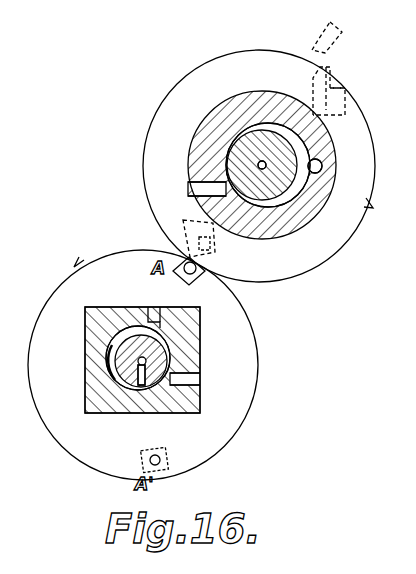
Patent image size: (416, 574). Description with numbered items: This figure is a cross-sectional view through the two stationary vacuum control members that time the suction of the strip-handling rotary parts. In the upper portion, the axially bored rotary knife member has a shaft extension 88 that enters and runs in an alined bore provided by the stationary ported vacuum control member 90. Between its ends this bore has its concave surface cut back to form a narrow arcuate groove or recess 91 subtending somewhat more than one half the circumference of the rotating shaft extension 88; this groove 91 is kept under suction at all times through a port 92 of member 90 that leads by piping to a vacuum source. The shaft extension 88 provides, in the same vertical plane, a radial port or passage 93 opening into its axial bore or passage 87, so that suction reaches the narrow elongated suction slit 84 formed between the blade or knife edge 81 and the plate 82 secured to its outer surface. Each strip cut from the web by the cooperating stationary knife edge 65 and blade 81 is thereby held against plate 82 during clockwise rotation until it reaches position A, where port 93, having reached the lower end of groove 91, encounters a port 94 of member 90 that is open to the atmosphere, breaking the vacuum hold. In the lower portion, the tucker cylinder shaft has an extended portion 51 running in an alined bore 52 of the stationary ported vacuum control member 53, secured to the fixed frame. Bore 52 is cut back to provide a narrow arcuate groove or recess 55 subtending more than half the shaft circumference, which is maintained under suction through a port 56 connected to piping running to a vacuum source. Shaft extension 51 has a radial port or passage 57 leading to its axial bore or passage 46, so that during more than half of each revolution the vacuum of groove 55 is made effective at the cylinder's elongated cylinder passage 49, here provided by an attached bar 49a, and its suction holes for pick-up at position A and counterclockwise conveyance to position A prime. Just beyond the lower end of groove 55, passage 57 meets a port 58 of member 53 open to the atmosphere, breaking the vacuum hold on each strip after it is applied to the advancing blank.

The axial bore or passage 46 is at (110, 353).
The elongated cylinder passage 49 is at (205, 268).
The attached bar 49a is at (193, 283).
The extended portion of shaft 51 is at (87, 386).
The alined bore 52 is at (168, 352).
The stationary ported vacuum control member 53 is at (86, 412).
The arcuate groove or recess 55 is at (112, 360).
The port 56 is at (148, 305).
The radial port or passage 57 is at (152, 378).
The port to the atmosphere 58 is at (188, 381).
The stationary knife edge 65 is at (322, 44).
The blade or knife edge 81 is at (313, 88).
The plate 82 is at (330, 82).
The suction slit 84 is at (340, 89).
The axial bore or passage 87 is at (265, 170).
The shaft extension 88 is at (226, 152).
The stationary ported vacuum control member 90 is at (372, 138).
The arcuate groove or recess 91 is at (304, 186).
The port 92 is at (322, 168).
The radial port or passage 93 is at (262, 160).
The port 94 is at (196, 188).